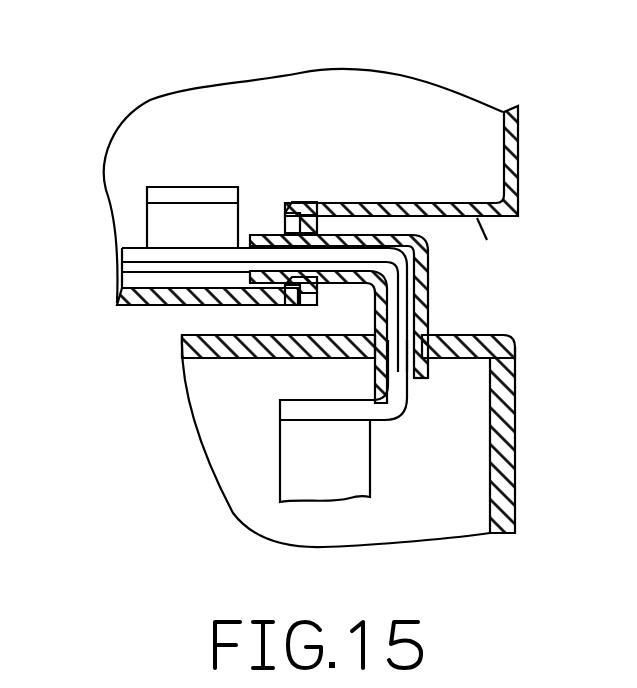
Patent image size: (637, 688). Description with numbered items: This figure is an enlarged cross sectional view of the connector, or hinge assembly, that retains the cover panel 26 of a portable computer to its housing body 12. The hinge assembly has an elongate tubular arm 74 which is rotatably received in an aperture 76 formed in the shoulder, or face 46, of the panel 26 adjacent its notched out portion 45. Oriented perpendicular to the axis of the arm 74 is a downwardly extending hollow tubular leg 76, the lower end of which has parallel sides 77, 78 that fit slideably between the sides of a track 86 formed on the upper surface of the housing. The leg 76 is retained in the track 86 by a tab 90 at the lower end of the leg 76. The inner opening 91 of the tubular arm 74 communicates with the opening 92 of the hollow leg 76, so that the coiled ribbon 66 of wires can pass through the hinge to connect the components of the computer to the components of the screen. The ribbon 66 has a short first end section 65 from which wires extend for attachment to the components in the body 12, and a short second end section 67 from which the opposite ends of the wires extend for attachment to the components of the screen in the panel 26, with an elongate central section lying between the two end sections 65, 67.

The housing body 12 is at (515, 492).
The cover panel 26 is at (521, 162).
The notched out portion 45 is at (487, 240).
The opposing face 46 is at (370, 306).
The first end section 65 is at (280, 455).
The ribbon 66 is at (398, 420).
The second end section 67 is at (147, 223).
The tubular arm 74 is at (413, 234).
The leg 76 is at (290, 260).
The parallel side 77 is at (412, 363).
The parallel side 78 is at (517, 358).
The track 86 is at (427, 367).
The tab 90 is at (417, 367).
The inner opening 91 is at (252, 238).
The opening 92 is at (398, 290).